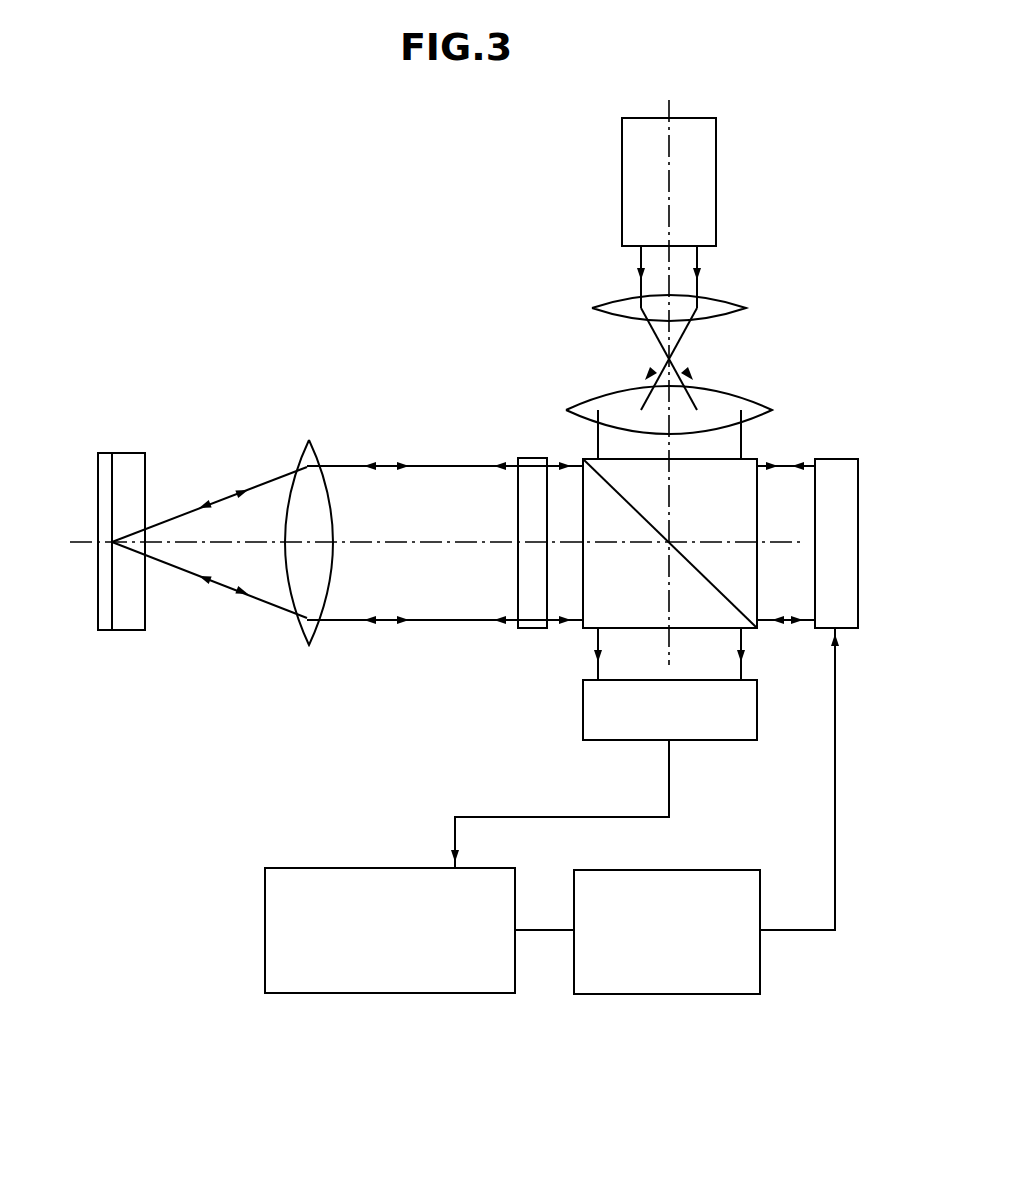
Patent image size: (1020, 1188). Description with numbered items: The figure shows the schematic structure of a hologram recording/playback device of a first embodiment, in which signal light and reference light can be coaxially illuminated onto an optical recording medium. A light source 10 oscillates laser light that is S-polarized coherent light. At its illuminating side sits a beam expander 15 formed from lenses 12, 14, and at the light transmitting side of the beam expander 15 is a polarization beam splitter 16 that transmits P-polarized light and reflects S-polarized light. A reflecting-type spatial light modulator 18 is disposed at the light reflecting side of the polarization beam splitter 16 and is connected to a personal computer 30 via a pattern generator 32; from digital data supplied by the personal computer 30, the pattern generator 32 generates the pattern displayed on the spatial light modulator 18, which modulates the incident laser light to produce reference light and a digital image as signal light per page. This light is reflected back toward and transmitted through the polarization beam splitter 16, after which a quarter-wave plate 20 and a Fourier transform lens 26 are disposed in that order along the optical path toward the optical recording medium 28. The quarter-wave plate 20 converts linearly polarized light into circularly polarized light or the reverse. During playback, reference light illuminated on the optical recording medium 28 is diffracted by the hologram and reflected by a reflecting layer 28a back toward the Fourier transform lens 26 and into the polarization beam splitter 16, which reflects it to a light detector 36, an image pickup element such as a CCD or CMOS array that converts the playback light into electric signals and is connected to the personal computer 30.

The light source 10 is at (712, 187).
The lens 12 is at (722, 302).
The lens 14 is at (754, 404).
The beam expander 15 is at (789, 253).
The polarization beam splitter 16 is at (750, 460).
The spatial light modulator 18 is at (860, 478).
The quarter-wave plate 20 is at (536, 460).
The Fourier transform lens 26 is at (307, 445).
The optical recording medium 28 is at (133, 460).
The reflecting layer 28a is at (103, 460).
The personal computer 30 is at (282, 867).
The pattern generator 32 is at (710, 870).
The light detector 36 is at (733, 741).